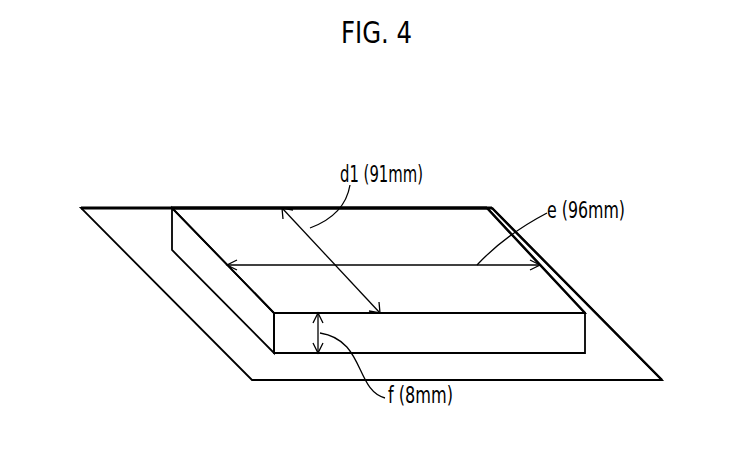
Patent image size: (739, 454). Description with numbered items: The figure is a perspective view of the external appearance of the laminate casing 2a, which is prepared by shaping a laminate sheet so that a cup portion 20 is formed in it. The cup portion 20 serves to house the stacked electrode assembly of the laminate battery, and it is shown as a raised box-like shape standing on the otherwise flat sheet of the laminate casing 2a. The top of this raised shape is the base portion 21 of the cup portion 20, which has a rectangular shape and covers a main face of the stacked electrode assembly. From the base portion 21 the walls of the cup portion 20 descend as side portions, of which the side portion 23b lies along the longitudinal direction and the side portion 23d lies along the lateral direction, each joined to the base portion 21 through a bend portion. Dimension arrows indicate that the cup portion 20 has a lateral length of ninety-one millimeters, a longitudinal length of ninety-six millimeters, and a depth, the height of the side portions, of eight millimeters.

The laminate casing 2a is at (120, 205).
The cup portion 20 is at (357, 279).
The base portion 21 is at (408, 228).
The side portion 23b is at (213, 268).
The side portion 23d is at (530, 340).